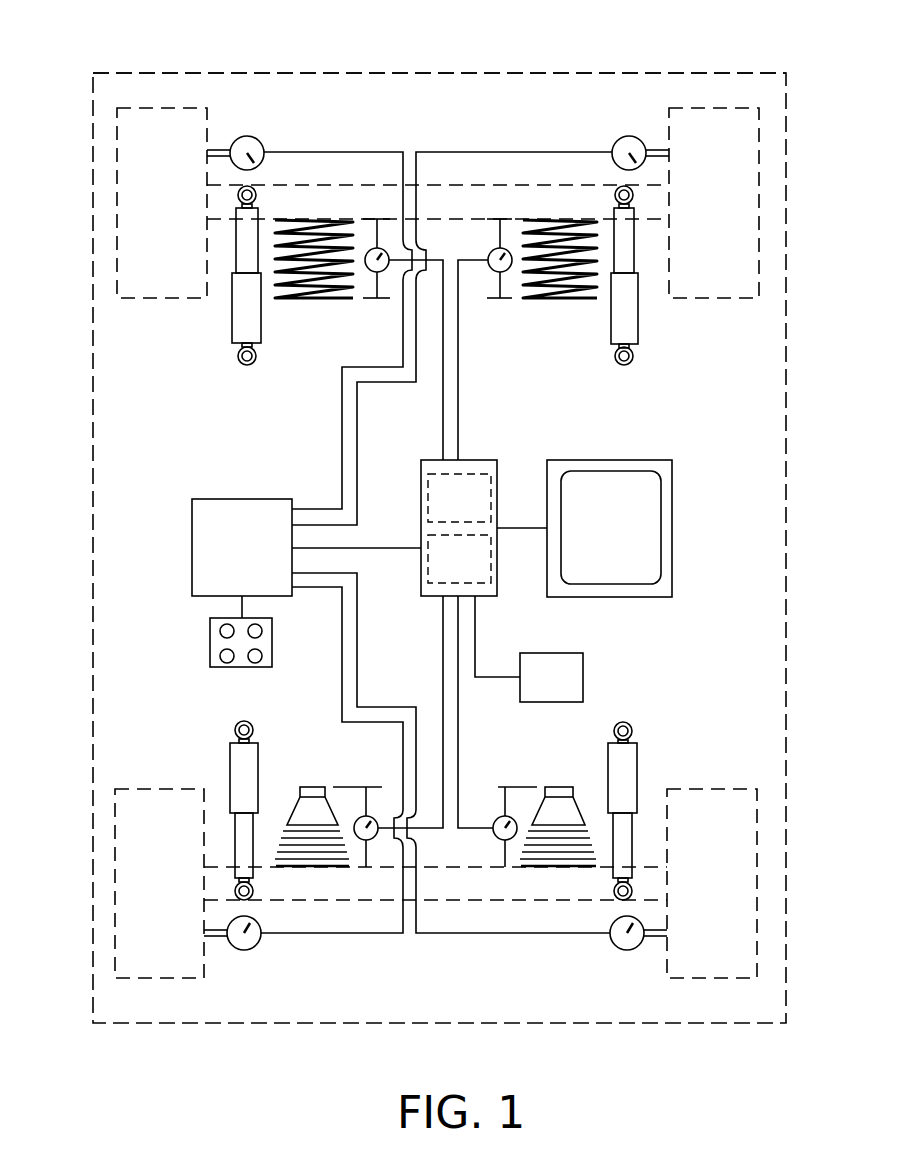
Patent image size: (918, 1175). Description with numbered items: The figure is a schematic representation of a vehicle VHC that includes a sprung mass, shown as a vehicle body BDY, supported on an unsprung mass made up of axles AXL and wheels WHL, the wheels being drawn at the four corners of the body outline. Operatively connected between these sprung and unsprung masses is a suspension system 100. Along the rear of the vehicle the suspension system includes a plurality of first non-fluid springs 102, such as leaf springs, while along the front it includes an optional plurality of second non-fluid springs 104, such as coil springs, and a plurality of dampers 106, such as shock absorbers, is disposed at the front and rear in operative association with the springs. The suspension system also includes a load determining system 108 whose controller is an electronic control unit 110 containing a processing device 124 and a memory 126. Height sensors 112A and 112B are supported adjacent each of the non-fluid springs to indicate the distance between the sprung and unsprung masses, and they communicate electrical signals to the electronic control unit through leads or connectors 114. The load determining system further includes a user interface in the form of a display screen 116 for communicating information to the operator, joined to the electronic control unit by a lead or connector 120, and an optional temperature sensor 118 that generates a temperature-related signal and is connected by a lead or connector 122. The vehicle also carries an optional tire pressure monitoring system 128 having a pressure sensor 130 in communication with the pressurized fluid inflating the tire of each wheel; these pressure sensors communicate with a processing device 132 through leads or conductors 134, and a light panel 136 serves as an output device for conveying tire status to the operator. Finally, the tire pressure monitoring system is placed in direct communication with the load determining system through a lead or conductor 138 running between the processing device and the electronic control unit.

The suspension system 100 is at (727, 599).
The first non-fluid springs 102 is at (307, 787).
The second non-fluid springs 104 is at (293, 298).
The dampers 106 is at (237, 323).
The load determining system 108 is at (511, 474).
The electronic control unit (ECU) 110 is at (474, 503).
The height sensors 112A is at (380, 836).
The height sensors 112B is at (372, 249).
The leads or connectors 114 is at (443, 390).
The display screen 116 is at (672, 518).
The temperature sensor 118 is at (583, 668).
The lead or connector 120 is at (523, 527).
The lead or connector 122 is at (475, 642).
The processing device 124 is at (459, 498).
The memory 126 is at (459, 559).
The tire pressure monitoring (TPM) system 128 is at (135, 468).
The pressure sensor 130 is at (258, 140).
The processing device 132 is at (240, 499).
The leads or conductors 134 is at (357, 450).
The light panel 136 is at (210, 630).
The lead or conductor 138 is at (373, 549).
The vehicle VHC is at (92, 100).
The vehicle body BDY is at (709, 72).
The wheels WHL is at (182, 298).
The axles AXL is at (437, 185).